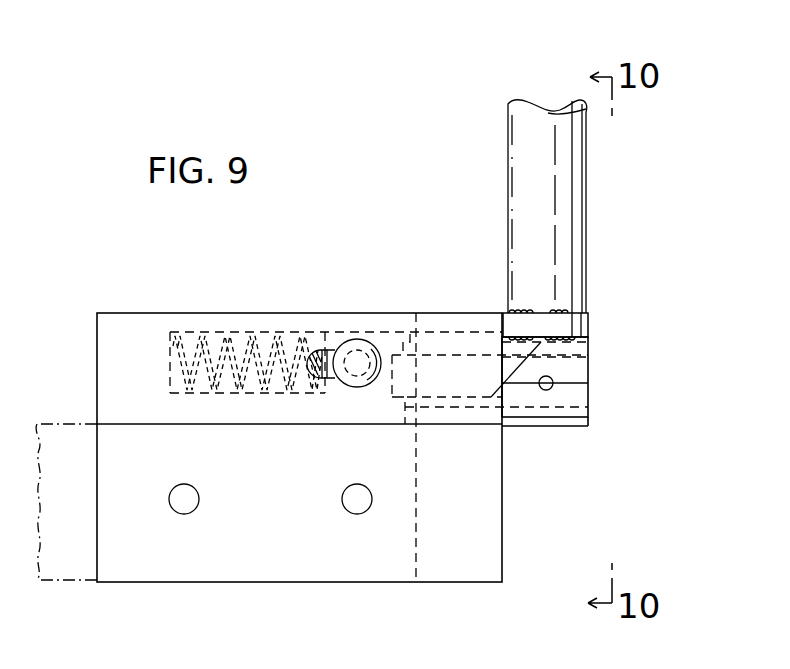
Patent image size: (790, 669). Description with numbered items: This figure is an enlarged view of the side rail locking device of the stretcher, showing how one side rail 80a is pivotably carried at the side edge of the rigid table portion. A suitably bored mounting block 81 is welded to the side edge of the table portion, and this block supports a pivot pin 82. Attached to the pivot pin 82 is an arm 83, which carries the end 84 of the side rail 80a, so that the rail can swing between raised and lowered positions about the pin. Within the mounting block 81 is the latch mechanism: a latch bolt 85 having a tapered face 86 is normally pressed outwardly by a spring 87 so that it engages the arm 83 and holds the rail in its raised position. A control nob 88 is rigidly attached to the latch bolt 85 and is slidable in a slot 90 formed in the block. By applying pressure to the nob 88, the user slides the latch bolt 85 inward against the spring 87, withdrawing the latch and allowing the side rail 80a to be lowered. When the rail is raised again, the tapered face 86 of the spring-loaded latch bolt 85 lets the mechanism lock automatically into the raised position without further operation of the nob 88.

The side rail 80a is at (514, 122).
The mounting block 81 is at (129, 322).
The pivot pin 82 is at (460, 407).
The arm 83 is at (580, 326).
The end of side rail 84 is at (572, 222).
The latch bolt 85 is at (387, 336).
The tapered face 86 is at (538, 349).
The spring 87 is at (213, 336).
The control nob 88 is at (355, 385).
The slot 90 is at (345, 350).